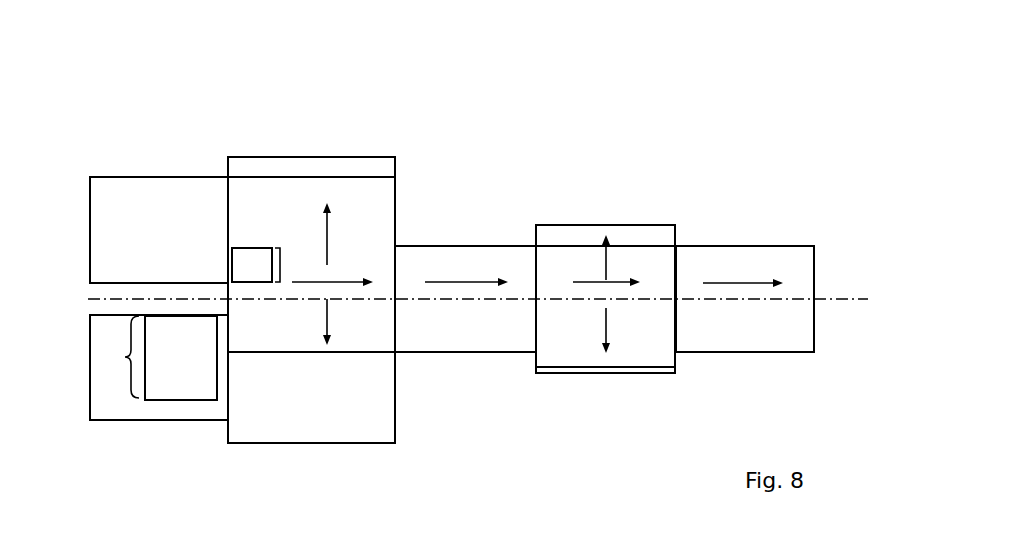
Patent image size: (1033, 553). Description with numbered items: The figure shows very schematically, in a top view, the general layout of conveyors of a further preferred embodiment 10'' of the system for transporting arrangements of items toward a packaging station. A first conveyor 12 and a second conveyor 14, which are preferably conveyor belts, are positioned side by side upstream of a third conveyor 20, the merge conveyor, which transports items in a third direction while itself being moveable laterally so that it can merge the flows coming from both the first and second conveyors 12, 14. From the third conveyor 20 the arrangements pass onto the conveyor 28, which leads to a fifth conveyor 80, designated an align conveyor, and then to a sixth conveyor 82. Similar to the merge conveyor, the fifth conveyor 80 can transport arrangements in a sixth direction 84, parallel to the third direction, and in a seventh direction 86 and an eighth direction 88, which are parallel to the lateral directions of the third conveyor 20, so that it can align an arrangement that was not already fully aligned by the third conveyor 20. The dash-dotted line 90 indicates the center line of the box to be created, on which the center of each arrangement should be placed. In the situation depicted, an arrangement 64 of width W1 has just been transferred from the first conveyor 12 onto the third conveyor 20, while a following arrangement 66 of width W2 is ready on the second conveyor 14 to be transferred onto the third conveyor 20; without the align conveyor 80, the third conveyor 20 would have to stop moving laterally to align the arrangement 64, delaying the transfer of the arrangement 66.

The system 10'' is at (455, 234).
The first conveyor 12 is at (135, 189).
The second conveyor 14 is at (107, 405).
The third conveyor 20 is at (378, 206).
The conveyor 28 is at (453, 338).
The arrangement 64 is at (253, 255).
The arrangement 66 is at (173, 387).
The fifth conveyor 80 is at (567, 350).
The sixth conveyor 82 is at (742, 268).
The sixth direction 84 is at (620, 282).
The seventh direction 86 is at (601, 327).
The eighth direction 88 is at (602, 253).
The center line 90 is at (733, 298).
The width W1 is at (287, 265).
The width W2 is at (125, 357).